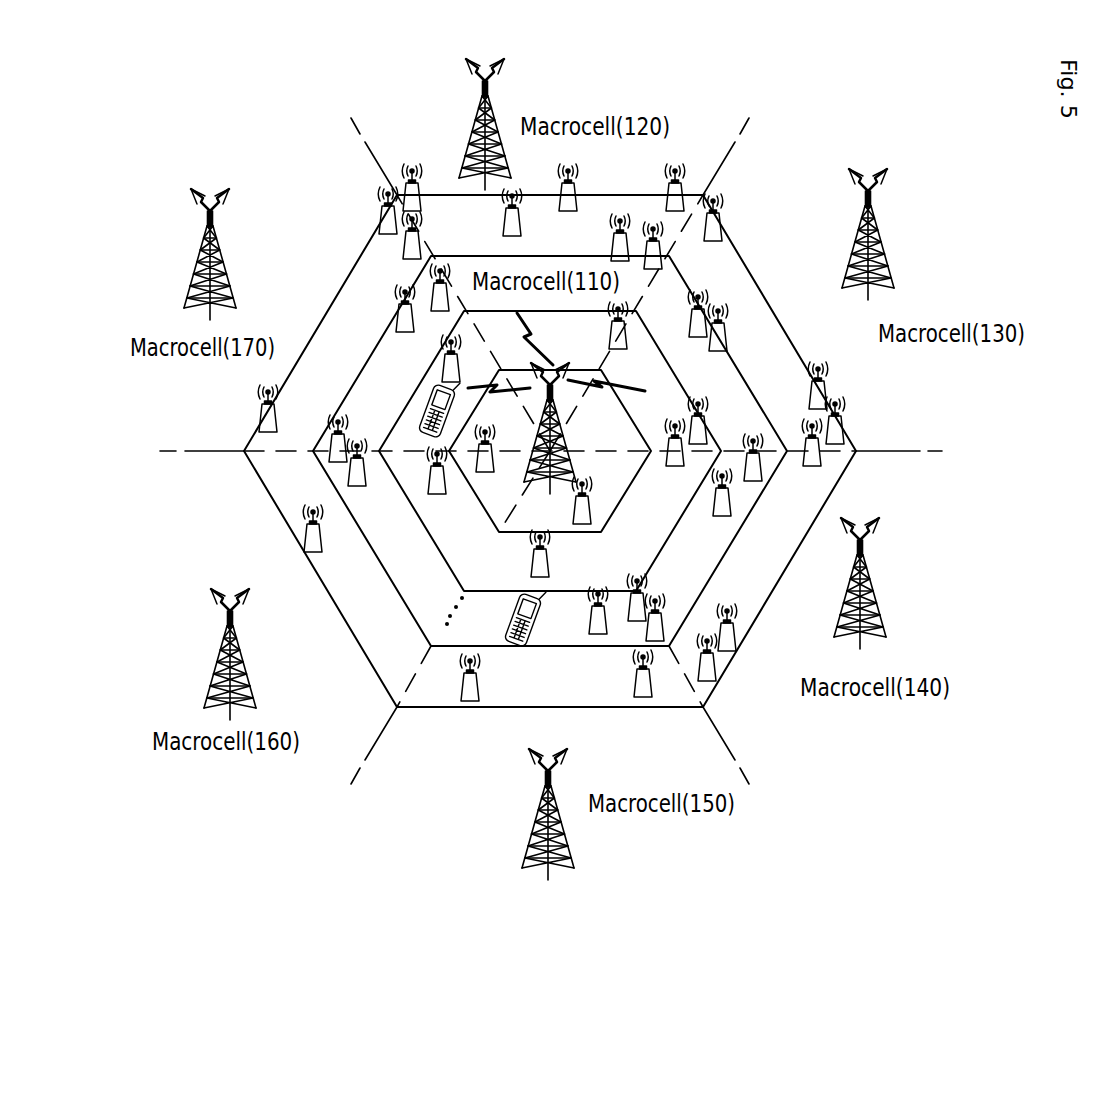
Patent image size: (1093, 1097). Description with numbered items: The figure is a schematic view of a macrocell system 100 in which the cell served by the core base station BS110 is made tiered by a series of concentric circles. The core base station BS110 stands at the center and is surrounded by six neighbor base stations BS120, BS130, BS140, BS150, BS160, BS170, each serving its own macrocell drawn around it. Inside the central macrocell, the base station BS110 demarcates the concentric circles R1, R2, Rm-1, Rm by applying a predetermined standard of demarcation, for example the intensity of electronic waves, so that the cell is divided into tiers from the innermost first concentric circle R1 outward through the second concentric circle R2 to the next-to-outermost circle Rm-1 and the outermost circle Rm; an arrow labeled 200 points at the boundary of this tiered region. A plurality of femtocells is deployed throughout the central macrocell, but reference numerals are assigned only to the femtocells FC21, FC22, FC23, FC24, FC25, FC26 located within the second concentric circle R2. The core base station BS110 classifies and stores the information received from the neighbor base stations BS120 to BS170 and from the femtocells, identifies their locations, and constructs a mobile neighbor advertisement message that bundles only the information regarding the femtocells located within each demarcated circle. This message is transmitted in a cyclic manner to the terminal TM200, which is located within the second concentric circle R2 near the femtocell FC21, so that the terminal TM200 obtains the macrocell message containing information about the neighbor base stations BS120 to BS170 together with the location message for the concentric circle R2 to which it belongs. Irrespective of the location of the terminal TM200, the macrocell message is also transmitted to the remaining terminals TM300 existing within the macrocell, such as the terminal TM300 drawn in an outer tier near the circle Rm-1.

The macrocell system 100 is at (940, 101).
The macrocell region boundary 200 is at (937, 444).
The core base station BS110 is at (562, 441).
The neighbor base station BS120 is at (476, 125).
The neighbor base station BS130 is at (880, 243).
The neighbor base station BS140 is at (876, 589).
The neighbor base station BS150 is at (531, 848).
The neighbor base station BS160 is at (218, 656).
The neighbor base station BS170 is at (198, 264).
The terminal TM200 is at (423, 423).
The remaining terminal TM300 is at (520, 648).
The femtocell FC21 is at (443, 367).
The femtocell FC22 is at (627, 343).
The femtocell FC23 is at (707, 432).
The femtocell FC24 is at (672, 468).
The femtocell FC25 is at (549, 562).
The femtocell FC26 is at (437, 494).
The first concentric circle R1 is at (513, 515).
The second concentric circle R2 is at (480, 572).
The (m-1)th concentric circle Rm-1 is at (457, 632).
The mth concentric circle Rm is at (417, 692).